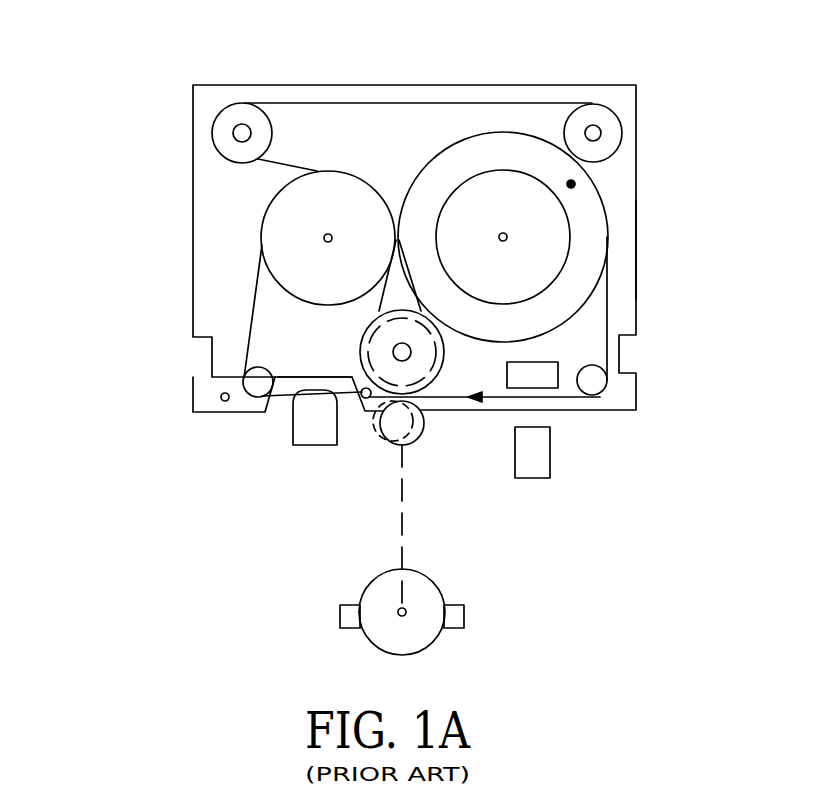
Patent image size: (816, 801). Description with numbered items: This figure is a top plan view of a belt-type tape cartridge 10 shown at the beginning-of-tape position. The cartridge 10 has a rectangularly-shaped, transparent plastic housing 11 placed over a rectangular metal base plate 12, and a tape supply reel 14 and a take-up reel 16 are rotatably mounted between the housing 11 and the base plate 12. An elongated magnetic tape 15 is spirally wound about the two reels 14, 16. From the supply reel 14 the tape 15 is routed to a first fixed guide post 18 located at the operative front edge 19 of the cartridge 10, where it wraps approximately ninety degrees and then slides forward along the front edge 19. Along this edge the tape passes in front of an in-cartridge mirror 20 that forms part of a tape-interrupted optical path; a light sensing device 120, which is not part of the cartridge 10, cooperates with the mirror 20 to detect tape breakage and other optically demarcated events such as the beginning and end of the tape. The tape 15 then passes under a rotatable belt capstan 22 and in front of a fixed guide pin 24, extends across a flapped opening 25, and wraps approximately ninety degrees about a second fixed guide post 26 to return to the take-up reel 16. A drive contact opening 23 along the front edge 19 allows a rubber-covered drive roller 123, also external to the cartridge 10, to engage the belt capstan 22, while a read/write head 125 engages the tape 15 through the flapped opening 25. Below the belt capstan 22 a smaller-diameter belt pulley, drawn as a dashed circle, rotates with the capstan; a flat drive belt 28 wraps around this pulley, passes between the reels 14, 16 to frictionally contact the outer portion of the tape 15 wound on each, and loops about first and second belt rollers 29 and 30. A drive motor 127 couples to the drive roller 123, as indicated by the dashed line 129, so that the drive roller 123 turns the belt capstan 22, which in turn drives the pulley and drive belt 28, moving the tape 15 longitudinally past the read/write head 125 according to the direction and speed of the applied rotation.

The tape cartridge 10 is at (112, 107).
The housing 11 is at (617, 280).
The base plate 12 is at (636, 242).
The tape supply reel 14 is at (568, 225).
The magnetic tape 15 is at (575, 182).
The take-up reel 16 is at (357, 171).
The first fixed guide post 18 is at (607, 397).
The operative front edge 19 is at (598, 418).
The in-cartridge mirror 20 is at (558, 388).
The belt capstan 22 is at (362, 332).
The drive contact opening 23 is at (433, 418).
The fixed guide pin 24 is at (363, 396).
The flapped opening 25 is at (320, 368).
The second fixed guide post 26 is at (255, 383).
The flat drive belt 28 is at (272, 166).
The first belt roller 29 is at (246, 104).
The second belt roller 30 is at (613, 123).
The light sensing device 120 is at (530, 478).
The drive roller 123 is at (383, 437).
The read/write head 125 is at (293, 417).
The drive motor 127 is at (340, 618).
The dashed line 129 is at (403, 523).